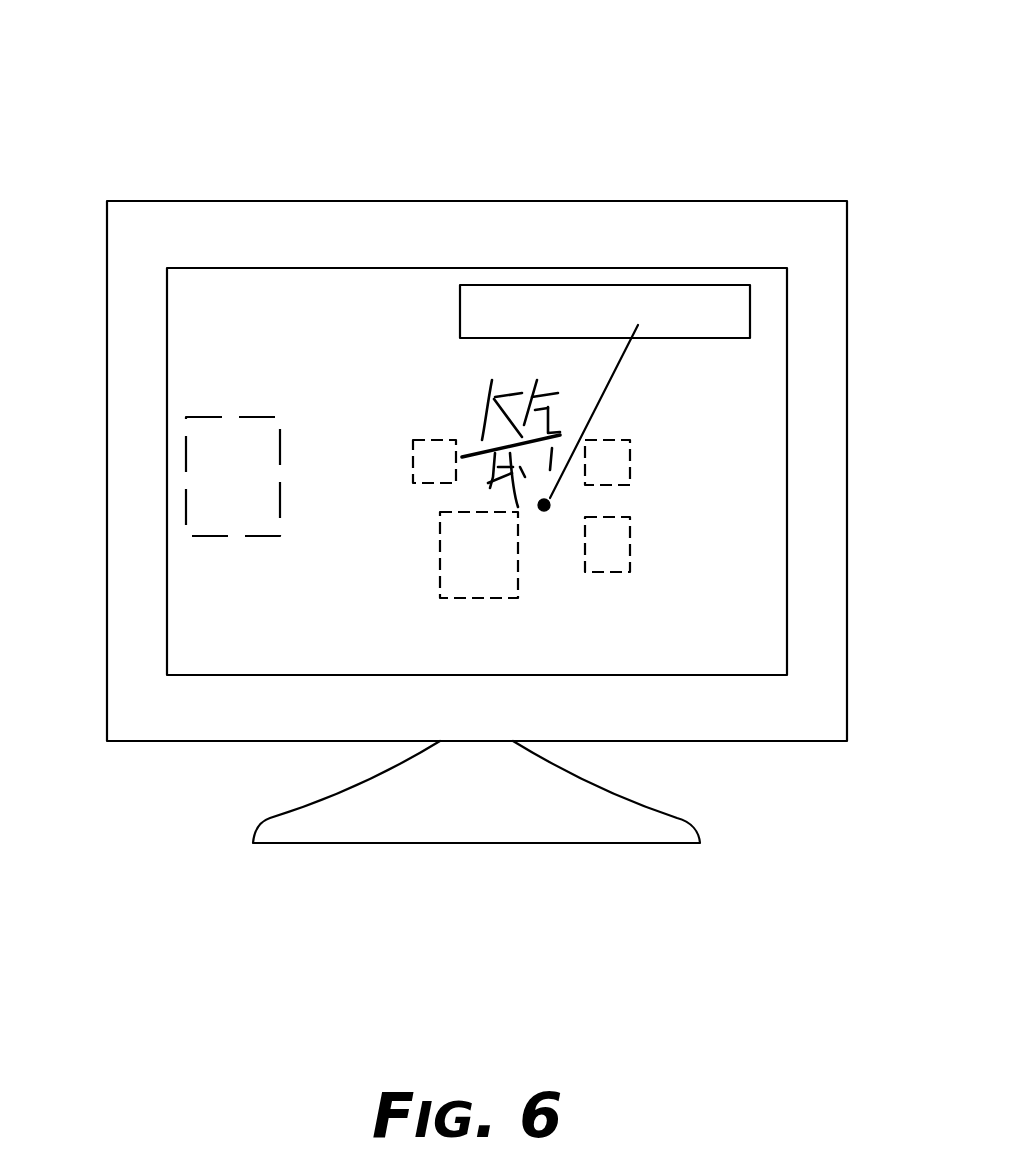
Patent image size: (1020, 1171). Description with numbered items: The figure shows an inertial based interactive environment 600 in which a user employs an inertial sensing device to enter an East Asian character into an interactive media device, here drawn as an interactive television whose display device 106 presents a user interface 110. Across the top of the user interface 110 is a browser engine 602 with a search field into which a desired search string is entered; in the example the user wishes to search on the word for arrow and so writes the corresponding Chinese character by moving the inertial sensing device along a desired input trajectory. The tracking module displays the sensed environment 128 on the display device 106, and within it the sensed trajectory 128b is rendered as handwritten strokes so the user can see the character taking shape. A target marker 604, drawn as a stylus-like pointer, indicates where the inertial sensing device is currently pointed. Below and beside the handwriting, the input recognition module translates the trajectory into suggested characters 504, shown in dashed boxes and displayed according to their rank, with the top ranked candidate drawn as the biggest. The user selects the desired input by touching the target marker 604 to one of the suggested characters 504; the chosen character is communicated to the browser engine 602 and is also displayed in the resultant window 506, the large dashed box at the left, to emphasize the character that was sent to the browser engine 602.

The inertial based interactive environment 600 is at (190, 52).
The display device 106 is at (253, 741).
The user interface 110 is at (440, 268).
The browser engine 602 is at (603, 285).
The target marker 604 is at (638, 325).
The sensed environment 128 is at (640, 415).
The sensed trajectory 128b is at (462, 428).
The suggested characters 504 is at (435, 480).
The resultant window 506 is at (185, 423).